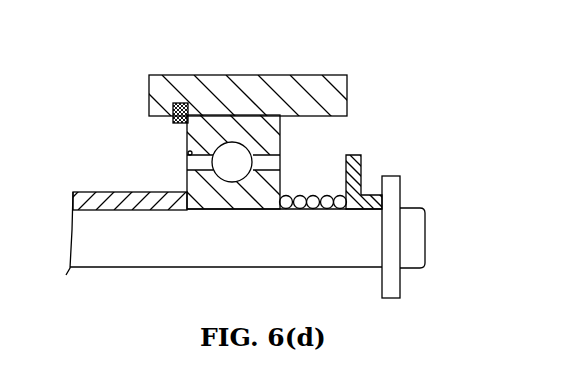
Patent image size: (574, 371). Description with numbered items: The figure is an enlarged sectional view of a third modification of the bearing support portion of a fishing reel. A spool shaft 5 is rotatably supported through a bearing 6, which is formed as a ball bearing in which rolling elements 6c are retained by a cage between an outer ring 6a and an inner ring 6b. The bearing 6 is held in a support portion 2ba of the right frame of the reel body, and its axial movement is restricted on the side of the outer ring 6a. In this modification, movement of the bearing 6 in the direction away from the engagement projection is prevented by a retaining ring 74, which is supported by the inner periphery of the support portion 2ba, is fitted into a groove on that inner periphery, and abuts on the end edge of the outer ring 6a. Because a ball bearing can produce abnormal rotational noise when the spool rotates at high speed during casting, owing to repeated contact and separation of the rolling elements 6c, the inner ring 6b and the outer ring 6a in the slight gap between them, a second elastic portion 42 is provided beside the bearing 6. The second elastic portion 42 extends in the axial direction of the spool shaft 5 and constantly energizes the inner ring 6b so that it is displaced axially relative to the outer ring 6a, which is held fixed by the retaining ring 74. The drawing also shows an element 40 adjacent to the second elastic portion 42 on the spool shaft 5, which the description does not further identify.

The spool shaft 5 is at (125, 237).
The support portion 2ba is at (252, 90).
The retaining ring 74 is at (172, 122).
The bearing 6 is at (241, 167).
The outer ring 6a is at (246, 140).
The inner ring 6b is at (247, 200).
The rolling elements 6c is at (232, 170).
The second elastic portion 42 is at (302, 195).
The nut 40 is at (362, 178).